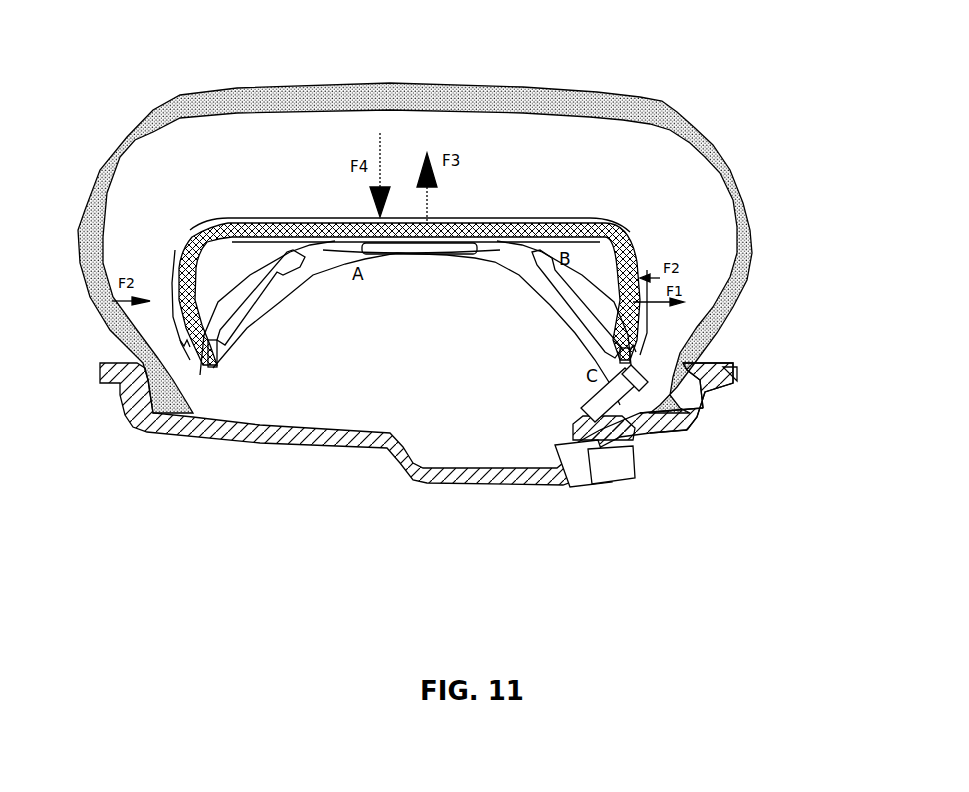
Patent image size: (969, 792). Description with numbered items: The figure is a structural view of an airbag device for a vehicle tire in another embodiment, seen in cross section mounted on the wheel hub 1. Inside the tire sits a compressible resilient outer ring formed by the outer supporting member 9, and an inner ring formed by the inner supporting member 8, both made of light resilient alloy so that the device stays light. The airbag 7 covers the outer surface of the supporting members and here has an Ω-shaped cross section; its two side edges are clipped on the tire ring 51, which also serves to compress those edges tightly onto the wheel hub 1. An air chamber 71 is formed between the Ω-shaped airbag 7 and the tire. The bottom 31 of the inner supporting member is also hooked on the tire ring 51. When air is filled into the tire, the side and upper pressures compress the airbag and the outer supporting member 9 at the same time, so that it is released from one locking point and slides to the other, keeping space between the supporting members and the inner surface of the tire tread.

The wheel hub 1 is at (563, 480).
The airbag 7 is at (523, 217).
The inner supporting member 8 is at (540, 253).
The outer supporting member 9 is at (613, 223).
The bottom of the inner supporting member 31 is at (703, 410).
The tire ring 51 is at (737, 365).
The air chamber 71 is at (710, 243).